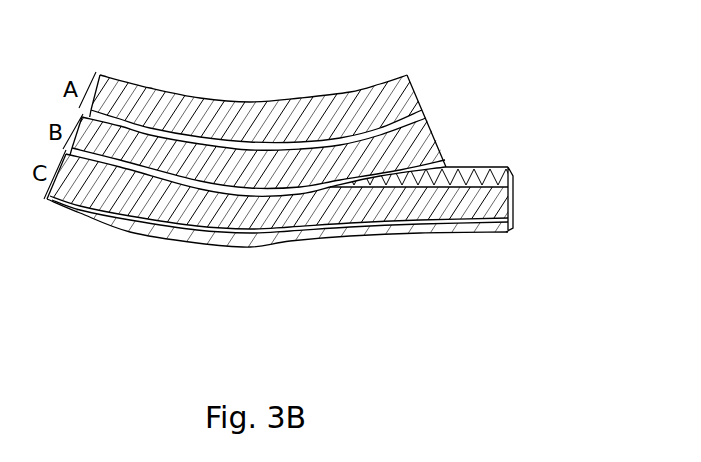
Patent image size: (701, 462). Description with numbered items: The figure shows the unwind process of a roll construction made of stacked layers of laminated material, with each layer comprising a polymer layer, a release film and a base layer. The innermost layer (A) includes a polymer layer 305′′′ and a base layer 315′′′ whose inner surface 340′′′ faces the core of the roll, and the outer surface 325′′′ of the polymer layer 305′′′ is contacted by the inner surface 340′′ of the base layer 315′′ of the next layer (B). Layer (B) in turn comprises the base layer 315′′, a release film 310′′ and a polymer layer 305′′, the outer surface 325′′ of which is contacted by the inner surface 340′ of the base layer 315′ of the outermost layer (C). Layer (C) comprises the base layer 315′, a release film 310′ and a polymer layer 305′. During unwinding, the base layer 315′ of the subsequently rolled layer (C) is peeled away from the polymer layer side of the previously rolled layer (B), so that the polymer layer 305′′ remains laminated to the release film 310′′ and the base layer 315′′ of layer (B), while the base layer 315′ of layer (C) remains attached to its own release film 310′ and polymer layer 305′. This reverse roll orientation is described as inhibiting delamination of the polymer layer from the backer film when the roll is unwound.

The release film 310′′ is at (123, 163).
The inner surface of base layer 340′′′ is at (332, 94).
The base layer 315′′′ is at (376, 108).
The inner surface of base layer 340′′ is at (420, 108).
The base layer 315′′ is at (423, 133).
The inner surface of base layer 340′ is at (450, 175).
The polymer layer 305′′ is at (212, 192).
The polymer layer 305′′′ is at (266, 156).
The outer surface of polymer layer 325′′ is at (236, 192).
The outer surface of polymer layer 325′′′ is at (298, 153).
The polymer layer 305′ is at (410, 207).
The release film 310′ is at (447, 212).
The base layer 315′ is at (496, 229).